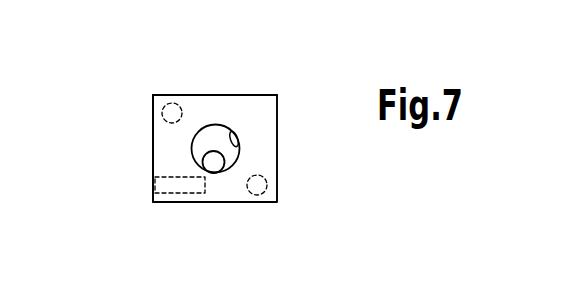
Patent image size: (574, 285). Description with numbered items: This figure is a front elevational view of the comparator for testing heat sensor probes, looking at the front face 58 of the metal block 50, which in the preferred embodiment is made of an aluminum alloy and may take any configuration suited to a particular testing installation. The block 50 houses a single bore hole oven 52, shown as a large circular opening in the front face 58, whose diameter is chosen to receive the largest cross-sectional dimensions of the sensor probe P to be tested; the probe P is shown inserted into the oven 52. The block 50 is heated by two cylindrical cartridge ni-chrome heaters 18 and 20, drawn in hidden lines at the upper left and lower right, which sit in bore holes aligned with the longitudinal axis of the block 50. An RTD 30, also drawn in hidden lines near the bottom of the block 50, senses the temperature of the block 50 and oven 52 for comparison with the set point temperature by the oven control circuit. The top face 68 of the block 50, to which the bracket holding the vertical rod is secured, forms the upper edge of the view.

The cartridge ni-chrome heater 18 is at (168, 98).
The cartridge ni-chrome heater 20 is at (267, 186).
The RTD 30 is at (187, 194).
The metal block 50 is at (240, 85).
The bore hole oven 52 is at (237, 146).
The front face 58 is at (163, 127).
The top face 68 is at (218, 94).
The sensor probe P is at (205, 151).